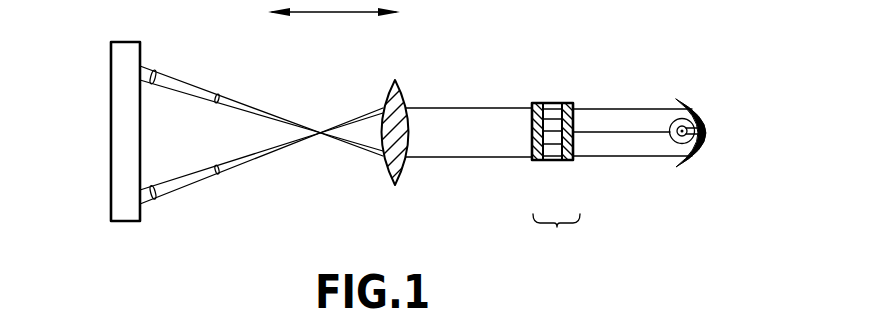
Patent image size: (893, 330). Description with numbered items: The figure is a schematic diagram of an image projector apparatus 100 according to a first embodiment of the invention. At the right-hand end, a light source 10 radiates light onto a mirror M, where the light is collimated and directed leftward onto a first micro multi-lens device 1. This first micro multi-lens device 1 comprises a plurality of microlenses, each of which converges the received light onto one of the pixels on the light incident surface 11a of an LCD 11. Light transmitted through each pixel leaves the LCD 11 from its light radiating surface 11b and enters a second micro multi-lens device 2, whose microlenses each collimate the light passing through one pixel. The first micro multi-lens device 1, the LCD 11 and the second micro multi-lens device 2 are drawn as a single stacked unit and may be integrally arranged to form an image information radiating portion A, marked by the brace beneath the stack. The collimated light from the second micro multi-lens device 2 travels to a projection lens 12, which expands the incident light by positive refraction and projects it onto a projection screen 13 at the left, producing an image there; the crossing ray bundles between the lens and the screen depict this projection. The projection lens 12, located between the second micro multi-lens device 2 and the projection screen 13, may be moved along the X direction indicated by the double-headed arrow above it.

The first micro multi-lens device 1 is at (559, 136).
The second micro multi-lens device 2 is at (534, 101).
The light source 10 is at (704, 145).
The LCD 11 is at (558, 162).
The light incident surface 11a is at (570, 138).
The light radiating surface 11b is at (537, 138).
The projection lens 12 is at (401, 97).
The projection screen 13 is at (116, 73).
The image projector apparatus 100 is at (666, 70).
The mirror M is at (680, 98).
The image information radiating portion A is at (562, 256).
The X direction X is at (334, 8).